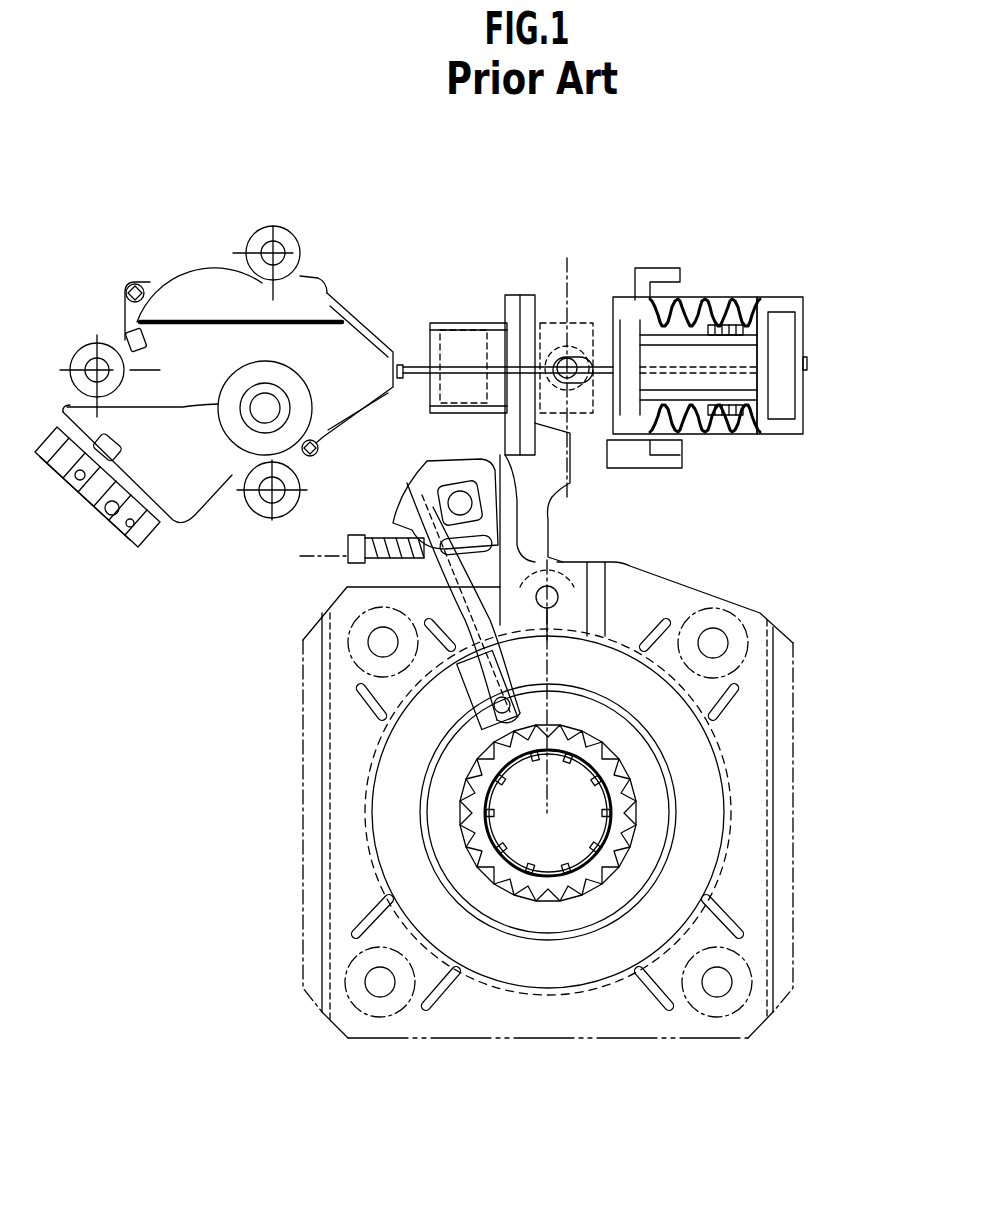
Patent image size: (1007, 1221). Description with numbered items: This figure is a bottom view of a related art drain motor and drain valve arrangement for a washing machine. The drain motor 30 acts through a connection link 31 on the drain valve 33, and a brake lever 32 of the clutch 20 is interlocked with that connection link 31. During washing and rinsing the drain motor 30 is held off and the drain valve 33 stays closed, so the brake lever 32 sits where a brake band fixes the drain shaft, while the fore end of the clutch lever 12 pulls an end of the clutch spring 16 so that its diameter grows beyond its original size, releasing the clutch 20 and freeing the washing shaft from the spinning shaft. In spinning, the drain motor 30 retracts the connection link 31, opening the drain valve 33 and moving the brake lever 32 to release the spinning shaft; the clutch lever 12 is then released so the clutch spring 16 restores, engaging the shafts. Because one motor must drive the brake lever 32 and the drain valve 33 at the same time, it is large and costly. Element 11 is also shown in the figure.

The drain motor 30 is at (210, 285).
The connection link 31 is at (472, 322).
The drain valve 33 is at (730, 285).
The brake lever 32 is at (565, 488).
The clutch spring 16 is at (348, 555).
The clutch lever 12 is at (428, 735).
The clutch 20 is at (743, 742).
The spline gear 11 is at (638, 798).